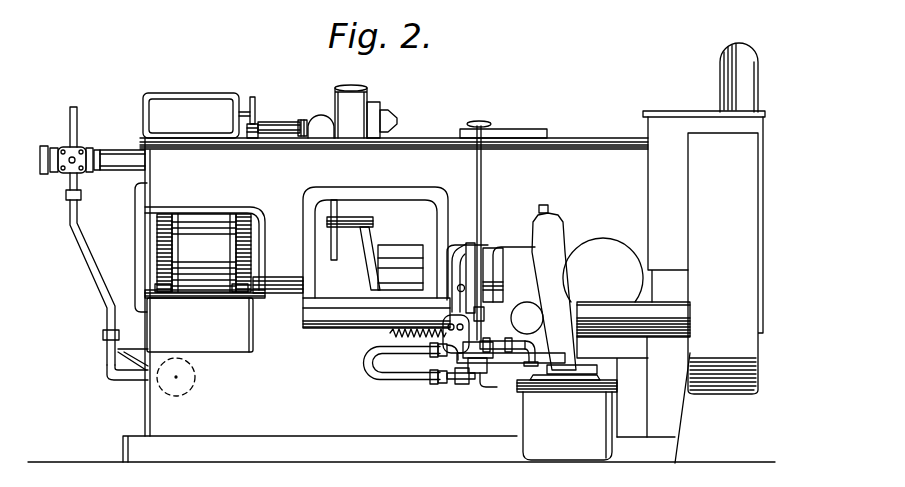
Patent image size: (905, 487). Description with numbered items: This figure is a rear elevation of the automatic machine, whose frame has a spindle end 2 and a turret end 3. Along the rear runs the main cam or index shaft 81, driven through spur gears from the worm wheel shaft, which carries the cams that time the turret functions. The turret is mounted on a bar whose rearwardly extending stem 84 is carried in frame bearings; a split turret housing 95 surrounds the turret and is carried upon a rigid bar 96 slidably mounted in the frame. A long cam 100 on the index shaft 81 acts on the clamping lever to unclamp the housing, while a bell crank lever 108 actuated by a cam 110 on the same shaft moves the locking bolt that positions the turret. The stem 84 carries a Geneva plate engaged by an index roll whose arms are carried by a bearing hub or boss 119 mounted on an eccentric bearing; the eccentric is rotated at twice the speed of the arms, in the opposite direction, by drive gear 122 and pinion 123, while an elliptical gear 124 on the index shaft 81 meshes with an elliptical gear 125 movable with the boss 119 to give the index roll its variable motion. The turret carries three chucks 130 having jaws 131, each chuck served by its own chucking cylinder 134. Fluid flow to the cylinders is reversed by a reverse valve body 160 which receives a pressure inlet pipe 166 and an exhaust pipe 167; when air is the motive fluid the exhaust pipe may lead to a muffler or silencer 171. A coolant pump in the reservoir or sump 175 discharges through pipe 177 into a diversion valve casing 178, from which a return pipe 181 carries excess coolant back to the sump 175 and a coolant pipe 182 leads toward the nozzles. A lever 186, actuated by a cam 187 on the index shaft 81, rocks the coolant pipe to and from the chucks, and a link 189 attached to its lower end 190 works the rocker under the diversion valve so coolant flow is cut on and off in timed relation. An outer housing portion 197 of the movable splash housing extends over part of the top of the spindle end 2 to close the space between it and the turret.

The spindle end 2 is at (603, 124).
The turret end 3 is at (280, 100).
The main cam or index shaft 81 is at (281, 295).
The rearwardly extending bar or stem 84 is at (115, 150).
The split turret housing 95 is at (359, 100).
The rigid bar 96 is at (414, 245).
The long cam 100 is at (343, 289).
The bell crank lever 108 is at (369, 254).
The cam 110 is at (407, 290).
The bearing hub or boss 119 is at (204, 253).
The drive gear 122 is at (240, 298).
The pinion 123 is at (246, 217).
The elliptical gear 124 is at (163, 298).
The elliptical gear 125 is at (165, 217).
The chuck 130 is at (380, 112).
The jaw 131 is at (398, 123).
The chucking cylinder 134 is at (285, 124).
The reverse valve body 160 is at (68, 175).
The pressure inlet pipe 166 is at (70, 121).
The exhaust pipe 167 is at (92, 276).
The muffler or silencer 171 is at (173, 392).
The coolant reservoir or sump 175 is at (567, 417).
The pump discharge pipe 177 is at (495, 338).
The diversion valve casing 178 is at (483, 372).
The return pipe 181 is at (511, 364).
The coolant pipe 182 is at (395, 381).
The lever 186 is at (447, 309).
The cam 187 is at (479, 242).
The link 189 is at (455, 386).
The lower end of lever 190 is at (447, 366).
The outer housing portion 197 is at (514, 129).